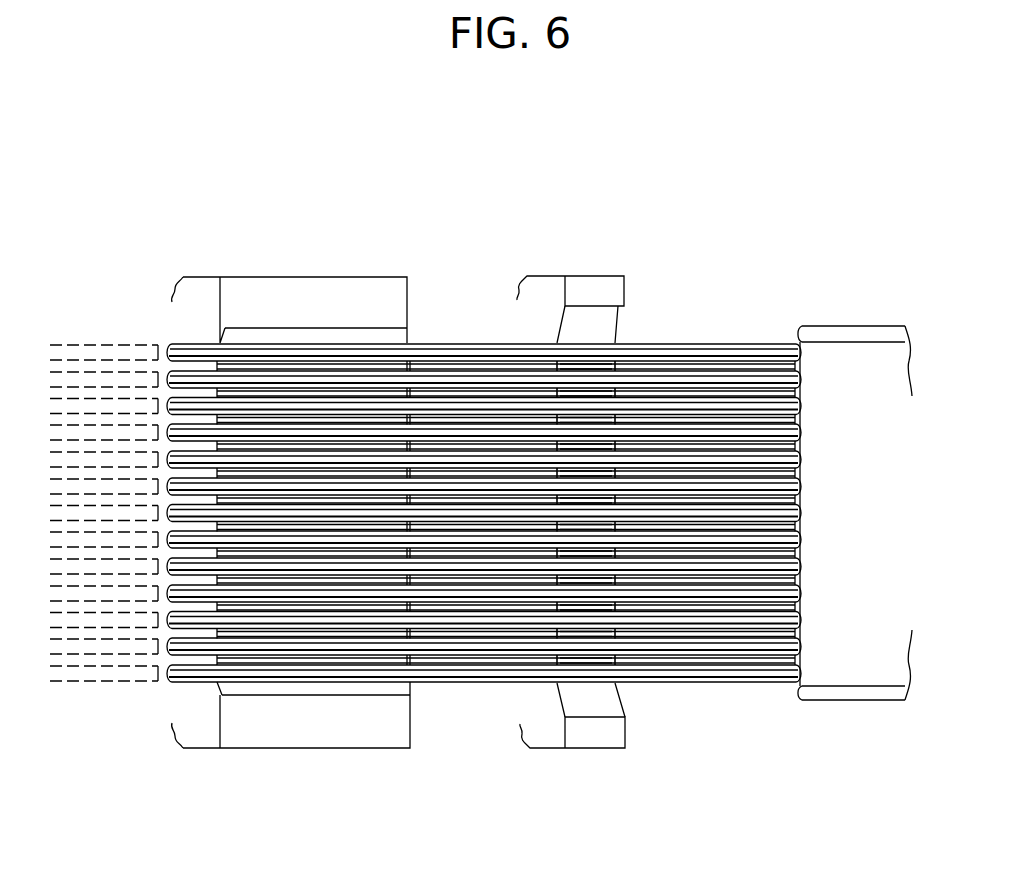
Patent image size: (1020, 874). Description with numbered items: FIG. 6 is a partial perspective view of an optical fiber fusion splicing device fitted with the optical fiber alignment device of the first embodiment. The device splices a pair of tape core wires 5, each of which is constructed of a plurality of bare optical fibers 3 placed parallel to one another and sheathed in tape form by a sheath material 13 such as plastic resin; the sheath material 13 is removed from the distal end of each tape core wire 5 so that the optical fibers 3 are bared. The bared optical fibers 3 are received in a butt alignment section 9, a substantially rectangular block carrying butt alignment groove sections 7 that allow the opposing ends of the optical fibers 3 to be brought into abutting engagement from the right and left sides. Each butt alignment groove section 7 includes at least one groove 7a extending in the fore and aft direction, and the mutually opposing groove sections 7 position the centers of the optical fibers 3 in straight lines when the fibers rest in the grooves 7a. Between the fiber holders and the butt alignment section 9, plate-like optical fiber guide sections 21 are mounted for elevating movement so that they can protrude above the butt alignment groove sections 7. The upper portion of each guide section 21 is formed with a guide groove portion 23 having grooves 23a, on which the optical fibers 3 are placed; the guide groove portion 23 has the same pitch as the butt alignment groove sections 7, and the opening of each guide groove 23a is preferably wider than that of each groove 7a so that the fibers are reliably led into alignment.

The bare optical fiber 3 is at (105, 373).
The tape core wire 5 is at (852, 714).
The butt alignment groove section 7 is at (310, 692).
The groove 7a is at (373, 340).
The butt alignment section 9 is at (295, 293).
The sheath material 13 is at (868, 368).
The optical fiber guide section 21 is at (592, 276).
The guide groove portion 23 is at (571, 336).
The guide groove 23a is at (610, 362).